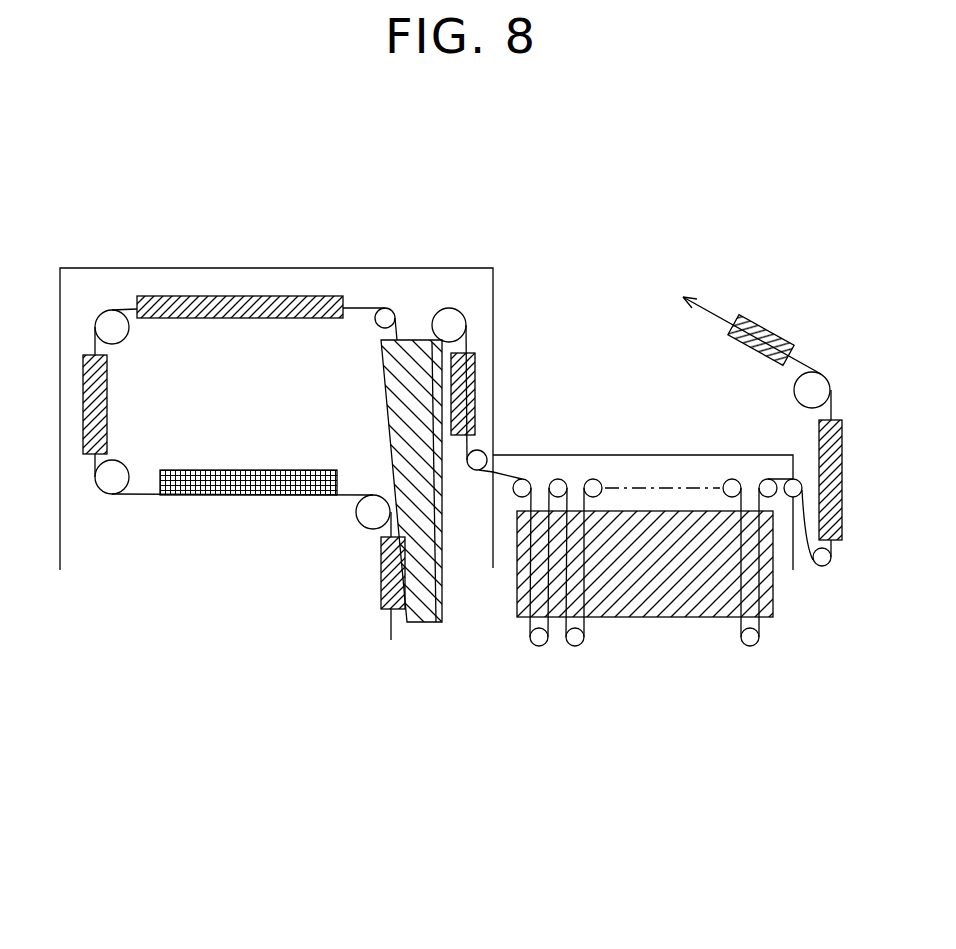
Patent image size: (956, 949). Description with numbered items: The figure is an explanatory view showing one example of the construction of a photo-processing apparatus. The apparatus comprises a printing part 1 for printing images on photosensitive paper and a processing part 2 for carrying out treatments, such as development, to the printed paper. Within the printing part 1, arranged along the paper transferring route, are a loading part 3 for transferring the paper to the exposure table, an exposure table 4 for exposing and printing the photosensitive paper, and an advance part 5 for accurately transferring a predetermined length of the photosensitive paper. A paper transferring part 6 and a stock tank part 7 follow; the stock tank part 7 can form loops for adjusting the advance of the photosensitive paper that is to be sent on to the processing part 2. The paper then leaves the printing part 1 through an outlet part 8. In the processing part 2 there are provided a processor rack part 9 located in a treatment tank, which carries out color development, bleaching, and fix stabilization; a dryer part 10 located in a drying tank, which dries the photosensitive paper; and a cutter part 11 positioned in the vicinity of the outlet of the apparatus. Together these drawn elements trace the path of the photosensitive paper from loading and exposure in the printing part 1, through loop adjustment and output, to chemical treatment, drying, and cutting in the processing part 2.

The printing part 1 is at (253, 692).
The processing part 2 is at (623, 705).
The loading part 3 is at (380, 598).
The exposure table 4 is at (290, 496).
The advance part 5 is at (83, 355).
The paper transferring part 6 is at (260, 297).
The stock tank part 7 is at (412, 340).
The outlet part 8 is at (475, 375).
The processor rack part 9 is at (662, 617).
The dryer part 10 is at (836, 545).
The cutter part 11 is at (770, 333).